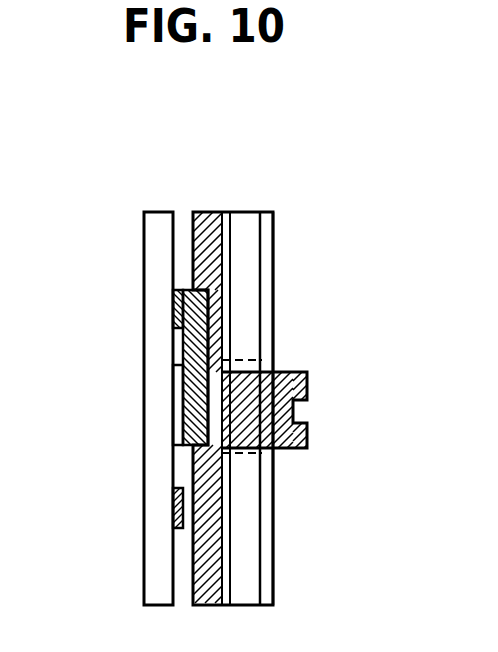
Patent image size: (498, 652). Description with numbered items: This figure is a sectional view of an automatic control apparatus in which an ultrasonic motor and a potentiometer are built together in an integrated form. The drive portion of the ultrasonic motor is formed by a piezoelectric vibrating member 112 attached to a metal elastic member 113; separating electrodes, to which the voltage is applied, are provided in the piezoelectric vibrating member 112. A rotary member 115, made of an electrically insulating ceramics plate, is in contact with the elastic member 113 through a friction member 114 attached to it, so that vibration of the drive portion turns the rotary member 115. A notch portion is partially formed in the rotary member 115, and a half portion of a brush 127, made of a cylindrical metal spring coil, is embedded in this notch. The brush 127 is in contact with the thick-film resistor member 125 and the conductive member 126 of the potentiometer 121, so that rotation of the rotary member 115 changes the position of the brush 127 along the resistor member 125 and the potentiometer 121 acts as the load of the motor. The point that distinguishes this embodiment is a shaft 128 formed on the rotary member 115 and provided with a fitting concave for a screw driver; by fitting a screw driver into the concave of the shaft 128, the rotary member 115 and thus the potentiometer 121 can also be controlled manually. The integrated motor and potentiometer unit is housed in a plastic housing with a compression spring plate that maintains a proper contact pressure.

The piezoelectric vibrating member 112 is at (268, 232).
The metal elastic member 113 is at (248, 215).
The friction member 114 is at (227, 215).
The rotary member 115 is at (208, 212).
The potentiometer 121 is at (157, 215).
The thick-film resistor member 125 is at (172, 305).
The conductive member 126 is at (176, 407).
The brush 127 is at (188, 358).
The shaft 128 is at (303, 372).